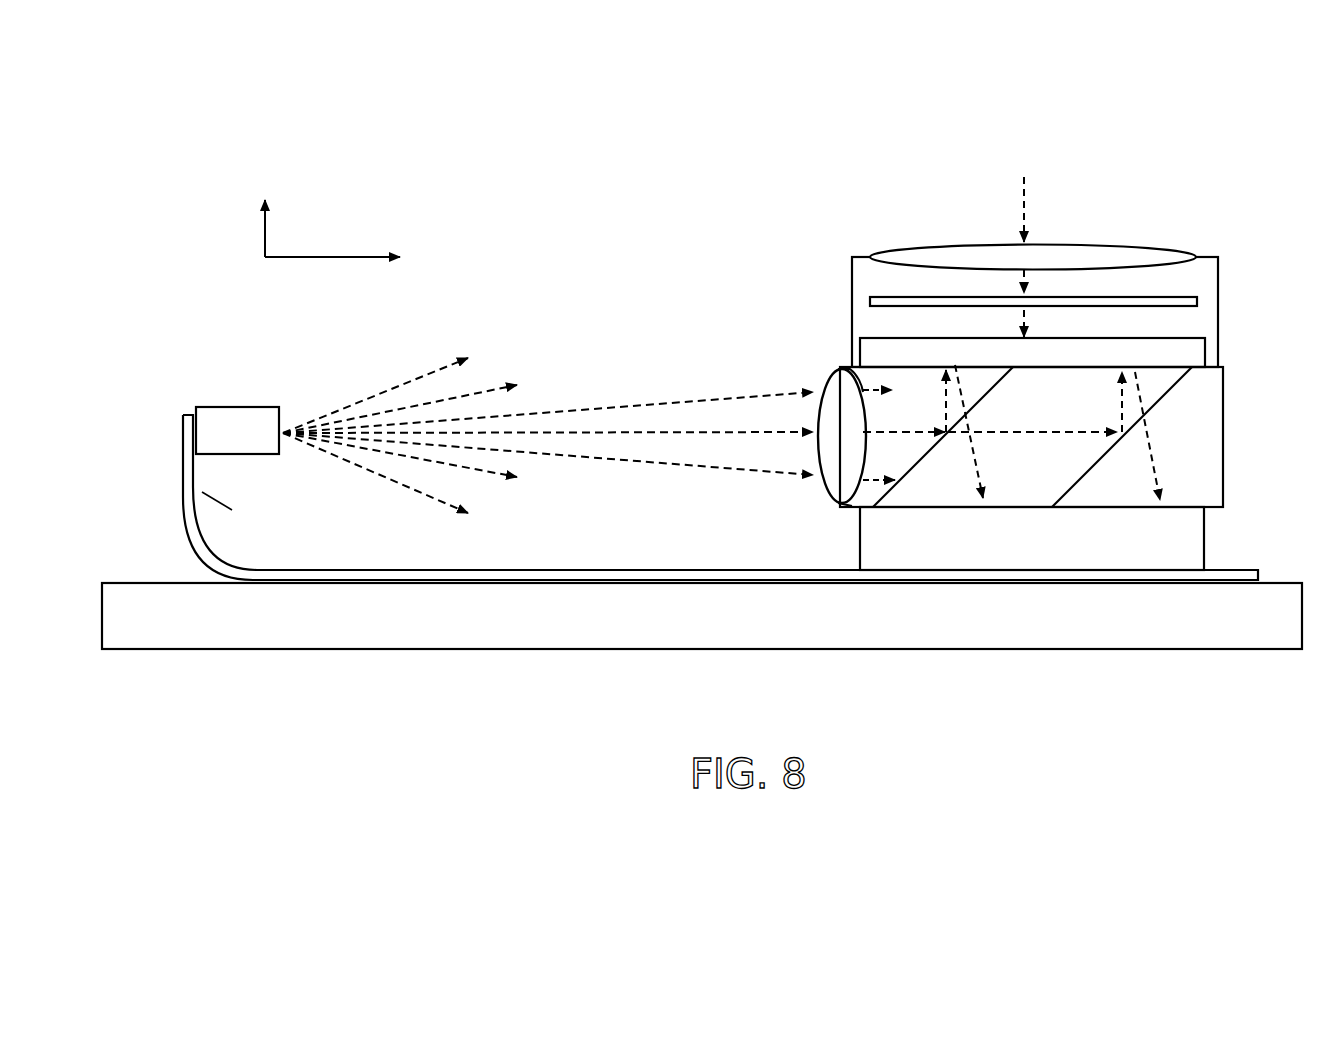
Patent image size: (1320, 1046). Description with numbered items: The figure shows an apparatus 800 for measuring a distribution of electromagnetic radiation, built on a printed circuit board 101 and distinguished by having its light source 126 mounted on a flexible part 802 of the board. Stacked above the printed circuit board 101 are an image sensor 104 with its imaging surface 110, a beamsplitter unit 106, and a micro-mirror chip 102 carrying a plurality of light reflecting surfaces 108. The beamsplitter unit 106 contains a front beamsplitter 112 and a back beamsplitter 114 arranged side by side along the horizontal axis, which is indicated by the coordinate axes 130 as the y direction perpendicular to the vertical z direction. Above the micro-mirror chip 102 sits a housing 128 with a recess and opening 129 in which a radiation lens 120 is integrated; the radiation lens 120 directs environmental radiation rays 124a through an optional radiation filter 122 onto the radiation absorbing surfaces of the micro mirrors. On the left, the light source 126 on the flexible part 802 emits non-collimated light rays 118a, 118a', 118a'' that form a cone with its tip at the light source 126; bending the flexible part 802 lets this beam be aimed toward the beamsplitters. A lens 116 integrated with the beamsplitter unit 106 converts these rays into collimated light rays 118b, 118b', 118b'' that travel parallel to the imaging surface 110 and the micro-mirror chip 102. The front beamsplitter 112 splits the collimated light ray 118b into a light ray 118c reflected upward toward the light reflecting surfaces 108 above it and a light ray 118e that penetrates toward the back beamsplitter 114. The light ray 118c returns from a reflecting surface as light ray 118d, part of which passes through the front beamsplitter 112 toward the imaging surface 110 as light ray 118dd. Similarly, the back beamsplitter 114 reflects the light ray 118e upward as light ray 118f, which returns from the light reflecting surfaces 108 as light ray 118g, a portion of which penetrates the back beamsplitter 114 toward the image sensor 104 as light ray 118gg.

The apparatus 800 is at (745, 198).
The printed circuit board 101 is at (718, 626).
The micro-mirror chip 102 is at (1206, 348).
The image sensor 104 is at (1205, 523).
The beamsplitter unit 106 is at (1224, 440).
The light reflecting surfaces 108 is at (968, 373).
The imaging surface 110 is at (1003, 498).
The front beamsplitter 112 is at (900, 518).
The back beamsplitter 114 is at (1105, 519).
The lens 116 is at (824, 380).
The non-collimated light ray 118a is at (548, 475).
The non-collimated light ray 118a' is at (548, 377).
The non-collimated light ray 118a'' is at (548, 492).
The collimated light ray 118b is at (904, 443).
The collimated light ray 118b' is at (819, 350).
The collimated light ray 118b'' is at (823, 533).
The light ray 118c is at (944, 412).
The light ray 118d is at (962, 364).
The light ray 118dd is at (968, 441).
The light ray 118e is at (1053, 430).
The light ray 118f is at (1118, 406).
The light ray 118g is at (1148, 363).
The light ray 118gg is at (1156, 476).
The radiation lens 120 is at (895, 245).
The radiation filter 122 is at (1197, 298).
The environmental radiation rays 124a is at (1030, 208).
The light source 126 is at (255, 406).
The housing 128 is at (158, 582).
The recess and opening 129 is at (856, 243).
The coordinate axes 130 is at (310, 257).
The flexible part 802 is at (293, 521).